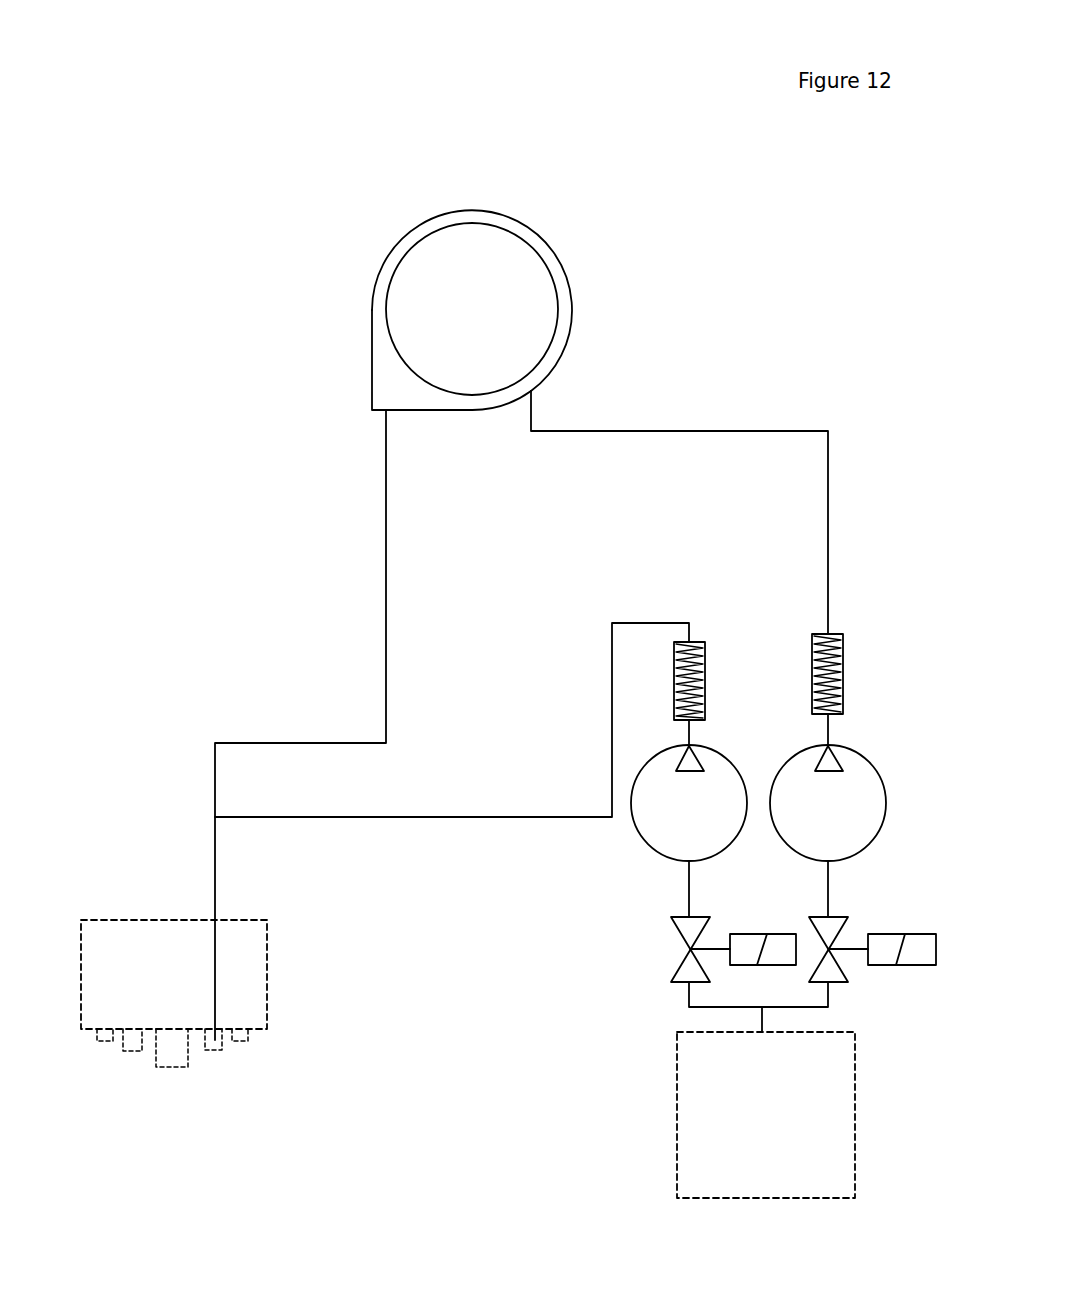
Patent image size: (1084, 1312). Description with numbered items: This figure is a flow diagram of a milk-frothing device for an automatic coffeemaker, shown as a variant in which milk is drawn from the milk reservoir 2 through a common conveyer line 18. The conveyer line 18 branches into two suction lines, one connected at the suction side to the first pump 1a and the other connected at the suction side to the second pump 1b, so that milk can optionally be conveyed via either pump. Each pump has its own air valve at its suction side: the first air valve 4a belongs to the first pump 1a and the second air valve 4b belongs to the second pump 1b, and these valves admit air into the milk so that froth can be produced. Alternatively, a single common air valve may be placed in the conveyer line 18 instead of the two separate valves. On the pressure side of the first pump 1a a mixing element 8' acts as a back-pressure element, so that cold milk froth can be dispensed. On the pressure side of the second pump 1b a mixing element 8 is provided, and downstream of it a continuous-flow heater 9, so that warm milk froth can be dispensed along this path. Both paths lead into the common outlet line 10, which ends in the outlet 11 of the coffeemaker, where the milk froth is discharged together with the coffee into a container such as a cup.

The continuous-flow heater 9 is at (472, 310).
The mixing element 8 is at (869, 670).
The mixing element 8' is at (713, 636).
The first pump 1a is at (689, 803).
The second pump 1b is at (828, 803).
The first air valve 4a is at (790, 933).
The second air valve 4b is at (930, 973).
The common conveyer line 18 is at (757, 1022).
The milk reservoir 2 is at (766, 1115).
The common outlet line 10 is at (203, 873).
The outlet 11 is at (217, 1055).